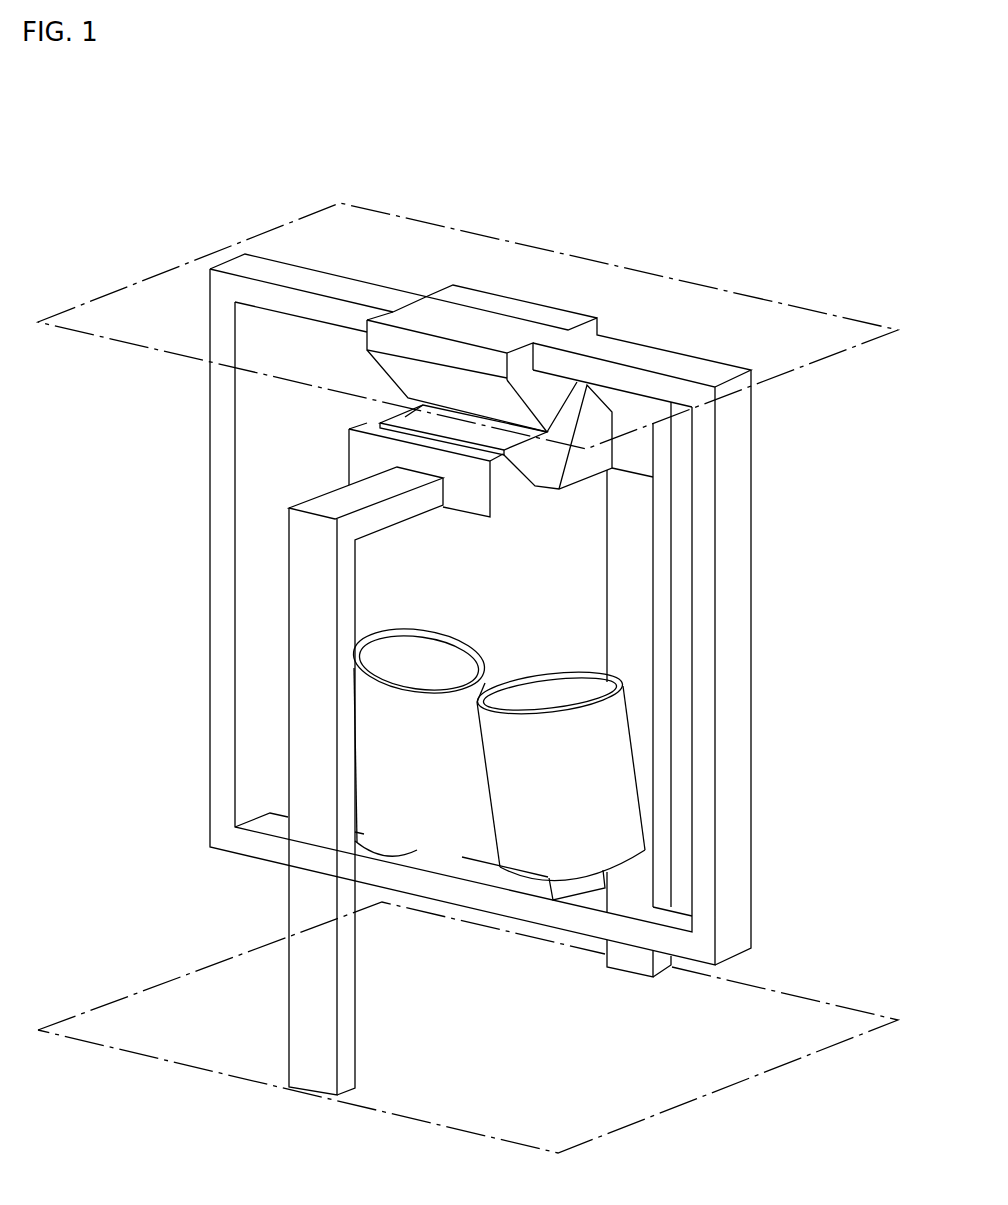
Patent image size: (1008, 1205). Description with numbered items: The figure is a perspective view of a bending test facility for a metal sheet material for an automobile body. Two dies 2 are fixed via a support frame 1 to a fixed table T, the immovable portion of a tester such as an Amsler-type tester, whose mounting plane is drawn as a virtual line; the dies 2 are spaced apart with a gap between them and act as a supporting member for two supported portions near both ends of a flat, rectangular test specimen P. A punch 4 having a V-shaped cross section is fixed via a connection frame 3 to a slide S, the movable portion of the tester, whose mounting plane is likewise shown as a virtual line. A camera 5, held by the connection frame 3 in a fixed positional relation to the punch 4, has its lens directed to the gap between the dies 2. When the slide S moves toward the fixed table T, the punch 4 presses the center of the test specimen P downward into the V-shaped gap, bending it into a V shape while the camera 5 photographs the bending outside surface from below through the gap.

The support frame 1 is at (307, 902).
The dies 2 is at (517, 497).
The connection frame 3 is at (742, 453).
The punch 4 is at (477, 410).
The camera 5 is at (442, 638).
The test specimen P is at (405, 417).
The slide S is at (775, 322).
The fixed table T is at (780, 1008).